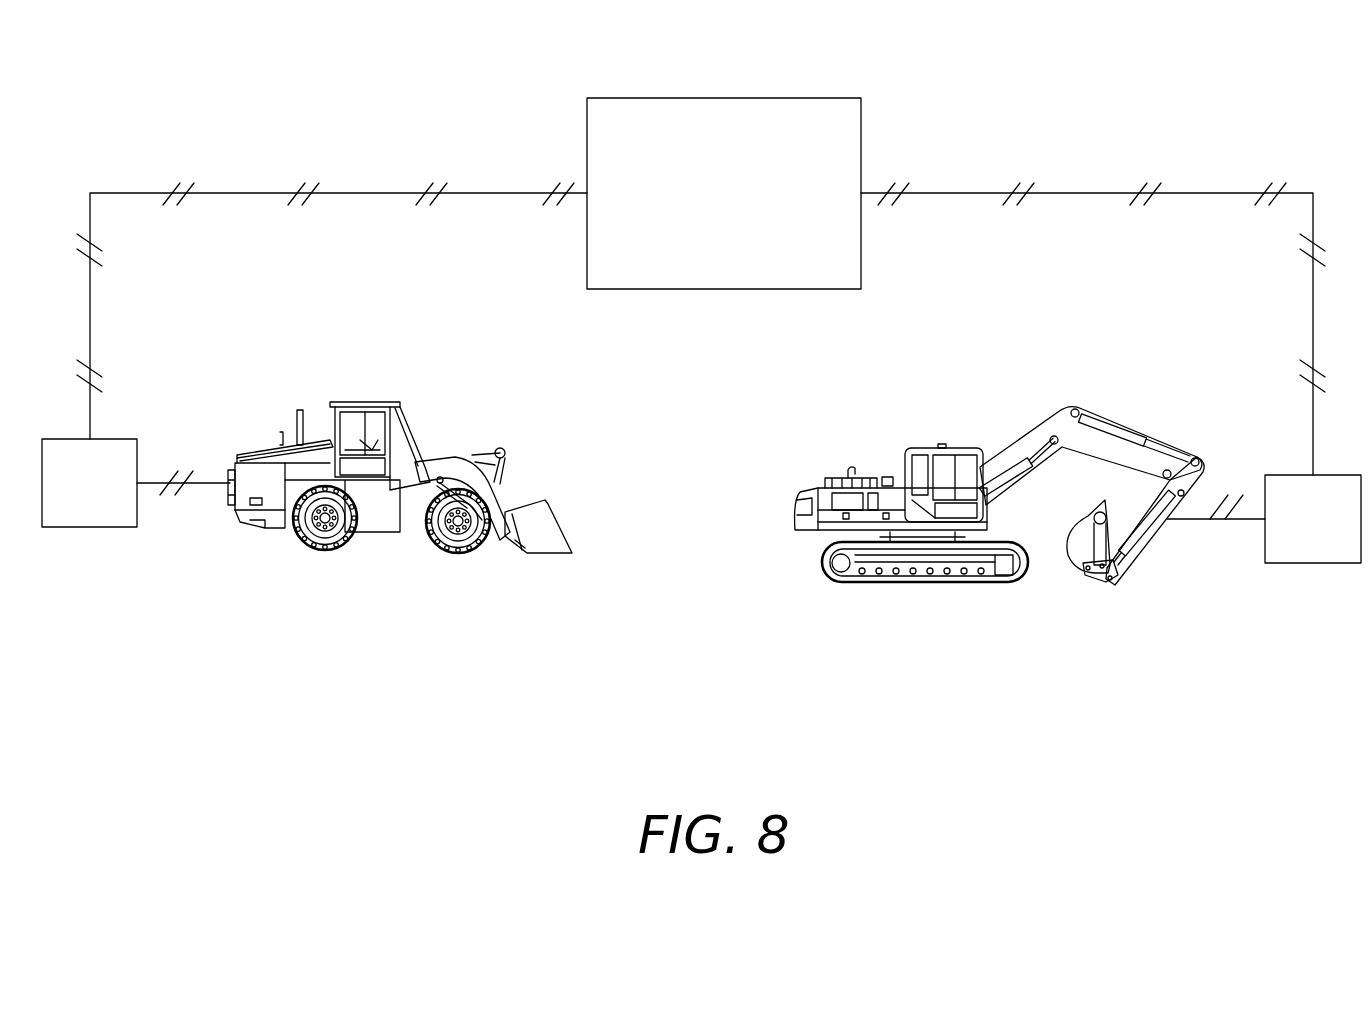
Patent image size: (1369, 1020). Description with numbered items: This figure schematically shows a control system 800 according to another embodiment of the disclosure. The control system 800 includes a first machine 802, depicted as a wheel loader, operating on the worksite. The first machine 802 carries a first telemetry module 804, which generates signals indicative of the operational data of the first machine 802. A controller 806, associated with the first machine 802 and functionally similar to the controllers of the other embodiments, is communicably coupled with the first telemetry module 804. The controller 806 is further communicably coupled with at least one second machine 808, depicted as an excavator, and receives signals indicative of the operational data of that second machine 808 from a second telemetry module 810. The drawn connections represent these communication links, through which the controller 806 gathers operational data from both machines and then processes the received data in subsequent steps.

The control system 800 is at (1118, 72).
The first machine 802 is at (305, 387).
The first telemetry module 804 is at (104, 494).
The controller 806 is at (698, 208).
The second machine 808 is at (1091, 388).
The second telemetry module 810 is at (1330, 536).